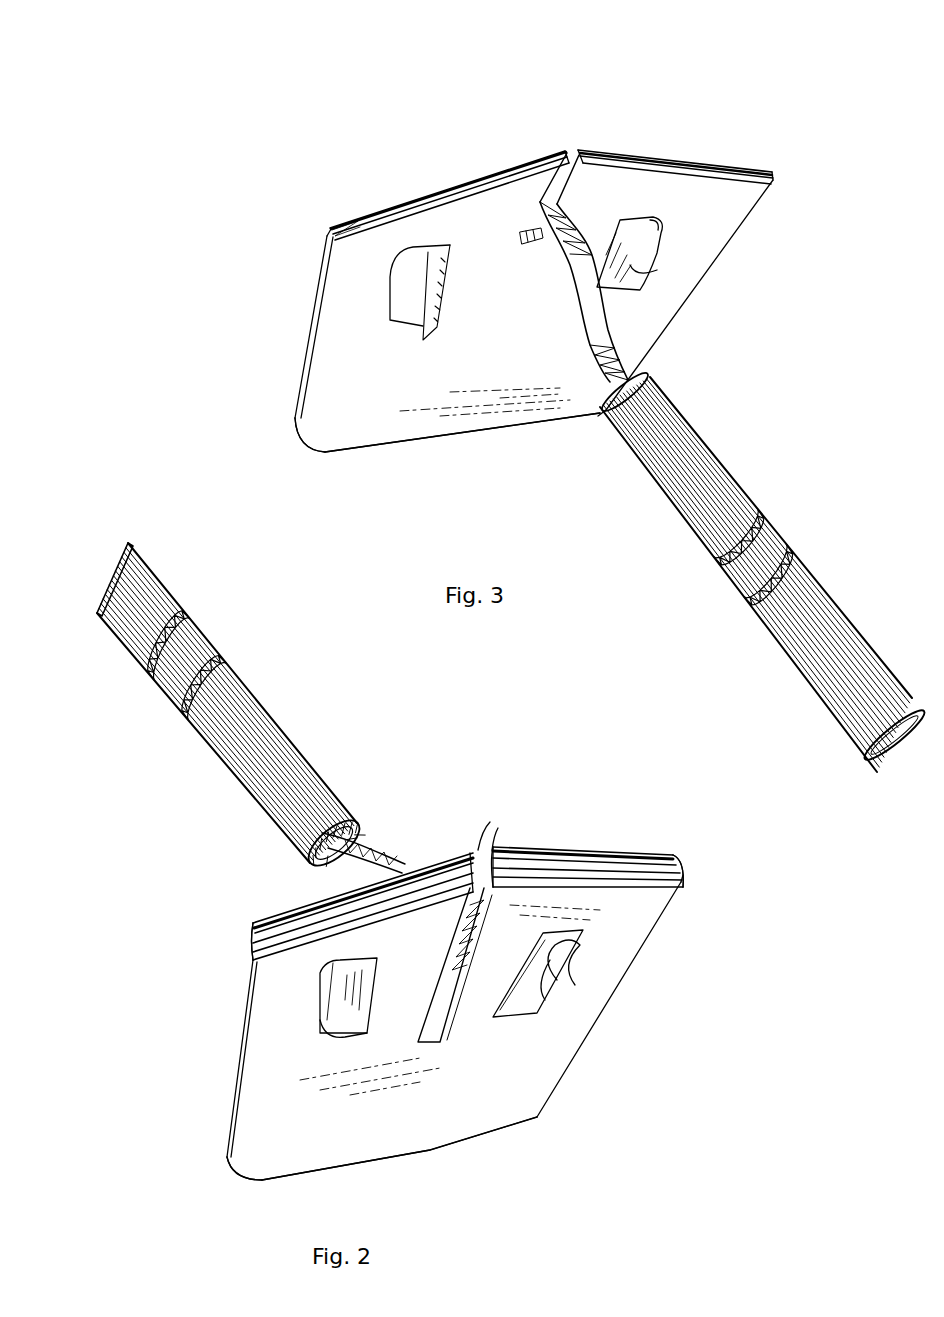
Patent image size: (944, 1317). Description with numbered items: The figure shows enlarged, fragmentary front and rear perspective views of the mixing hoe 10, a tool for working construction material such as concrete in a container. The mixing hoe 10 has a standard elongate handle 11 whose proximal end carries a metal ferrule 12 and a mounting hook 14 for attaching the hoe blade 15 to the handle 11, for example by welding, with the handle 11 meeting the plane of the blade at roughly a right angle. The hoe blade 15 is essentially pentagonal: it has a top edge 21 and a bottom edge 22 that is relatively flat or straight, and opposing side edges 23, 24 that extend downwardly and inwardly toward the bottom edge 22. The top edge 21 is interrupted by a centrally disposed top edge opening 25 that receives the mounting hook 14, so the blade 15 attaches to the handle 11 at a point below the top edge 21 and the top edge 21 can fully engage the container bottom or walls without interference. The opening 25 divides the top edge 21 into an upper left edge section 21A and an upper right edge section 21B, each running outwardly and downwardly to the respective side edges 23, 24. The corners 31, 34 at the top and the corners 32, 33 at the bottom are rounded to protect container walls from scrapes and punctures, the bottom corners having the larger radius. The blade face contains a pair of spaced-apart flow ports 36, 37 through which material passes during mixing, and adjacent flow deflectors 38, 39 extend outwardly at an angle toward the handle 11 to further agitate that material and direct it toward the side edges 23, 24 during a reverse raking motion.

In FIG. 3, the mixing hoe 10 is at (808, 343).
In FIG. 2, the mixing hoe 10 is at (172, 820).
In FIG. 3, the elongate handle 11 is at (863, 643).
In FIG. 2, the elongate handle 11 is at (167, 583).
In FIG. 3, the metal ferrule 12 is at (673, 478).
In FIG. 2, the metal ferrule 12 is at (290, 732).
In FIG. 3, the mounting hook 14 is at (597, 292).
In FIG. 2, the mounting hook 14 is at (383, 863).
In FIG. 3, the hoe blade 15 is at (360, 403).
In FIG. 2, the hoe blade 15 is at (280, 1102).
In FIG. 3, the top edge 21 is at (551, 134).
In FIG. 2, the top edge 21 is at (460, 870).
In FIG. 3, the upper left edge section 21A is at (430, 190).
In FIG. 2, the upper left edge section 21A is at (287, 907).
In FIG. 3, the upper right edge section 21B is at (688, 160).
In FIG. 2, the upper right edge section 21B is at (580, 850).
In FIG. 3, the bottom edge 22 is at (462, 432).
In FIG. 2, the bottom edge 22 is at (447, 1153).
In FIG. 3, the side edge 23 is at (662, 335).
In FIG. 2, the side edge 23 is at (247, 983).
In FIG. 3, the side edge 24 is at (305, 353).
In FIG. 2, the side edge 24 is at (670, 923).
In FIG. 3, the top edge opening 25 is at (563, 153).
In FIG. 2, the top edge opening 25 is at (483, 847).
In FIG. 3, the top corner 31 is at (780, 170).
In FIG. 2, the top corner 31 is at (253, 923).
In FIG. 3, the bottom corner 32 is at (598, 425).
In FIG. 2, the bottom corner 32 is at (237, 1177).
In FIG. 3, the bottom corner 33 is at (300, 440).
In FIG. 2, the bottom corner 33 is at (540, 1118).
In FIG. 3, the top corner 34 is at (323, 230).
In FIG. 2, the top corner 34 is at (683, 873).
In FIG. 3, the flow port 36 is at (620, 222).
In FIG. 2, the flow port 36 is at (320, 993).
In FIG. 3, the flow port 37 is at (390, 272).
In FIG. 2, the flow port 37 is at (557, 980).
In FIG. 3, the flow deflector 38 is at (640, 265).
In FIG. 2, the flow deflector 38 is at (320, 1020).
In FIG. 3, the flow deflector 39 is at (420, 306).
In FIG. 2, the flow deflector 39 is at (540, 1013).